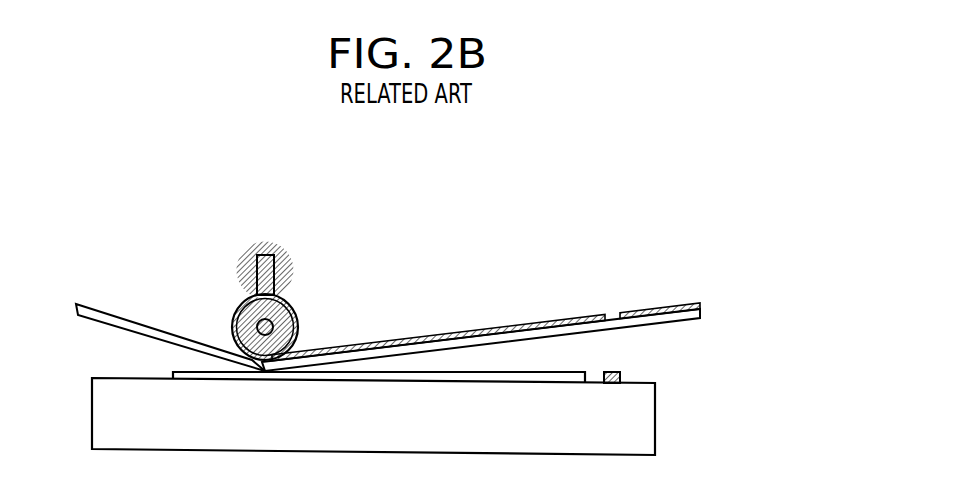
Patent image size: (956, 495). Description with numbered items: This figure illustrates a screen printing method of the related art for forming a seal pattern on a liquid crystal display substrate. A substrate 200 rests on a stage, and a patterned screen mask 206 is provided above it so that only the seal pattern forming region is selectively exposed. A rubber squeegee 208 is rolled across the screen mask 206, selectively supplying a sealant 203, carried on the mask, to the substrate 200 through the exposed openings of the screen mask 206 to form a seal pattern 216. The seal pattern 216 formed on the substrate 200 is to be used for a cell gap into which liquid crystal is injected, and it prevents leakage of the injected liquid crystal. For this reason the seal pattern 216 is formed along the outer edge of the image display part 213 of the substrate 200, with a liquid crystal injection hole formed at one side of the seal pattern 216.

The substrate 200 is at (632, 427).
The sealant 203 is at (666, 307).
The screen mask 206 is at (700, 311).
The rubber squeegee 208 is at (277, 314).
The image display part 213 is at (582, 373).
The seal pattern 216 is at (622, 377).